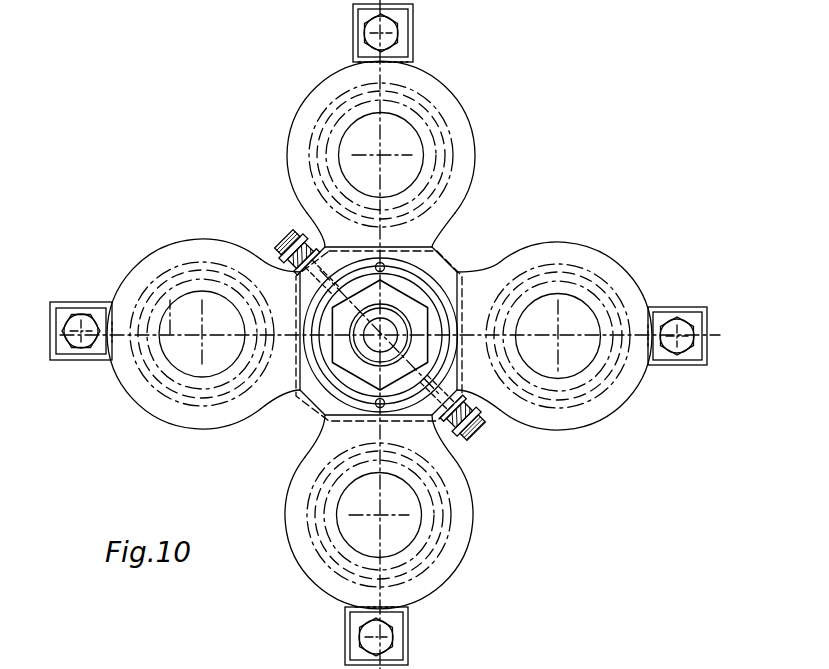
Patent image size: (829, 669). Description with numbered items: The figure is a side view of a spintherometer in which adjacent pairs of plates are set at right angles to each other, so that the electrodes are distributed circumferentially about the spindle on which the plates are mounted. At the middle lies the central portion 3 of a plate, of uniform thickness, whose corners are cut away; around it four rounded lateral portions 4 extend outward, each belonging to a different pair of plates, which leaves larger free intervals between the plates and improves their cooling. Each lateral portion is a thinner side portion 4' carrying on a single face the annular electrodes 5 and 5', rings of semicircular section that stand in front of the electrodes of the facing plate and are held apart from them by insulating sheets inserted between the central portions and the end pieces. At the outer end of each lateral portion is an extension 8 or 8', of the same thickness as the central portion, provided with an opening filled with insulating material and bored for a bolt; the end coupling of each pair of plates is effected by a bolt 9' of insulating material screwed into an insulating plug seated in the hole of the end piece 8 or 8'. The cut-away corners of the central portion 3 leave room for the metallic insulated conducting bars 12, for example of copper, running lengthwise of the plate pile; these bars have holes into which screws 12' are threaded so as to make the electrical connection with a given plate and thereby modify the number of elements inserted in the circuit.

The central portion 3 is at (437, 275).
The lateral portion 4 is at (379, 335).
The side portion 4' is at (469, 433).
The ring 5 is at (307, 442).
The ring 5' is at (478, 265).
The extension 8 is at (249, 485).
The extension 8' is at (532, 211).
The bolt 9' is at (378, 335).
The conducting bar 12 is at (300, 235).
The screw 12' is at (375, 343).